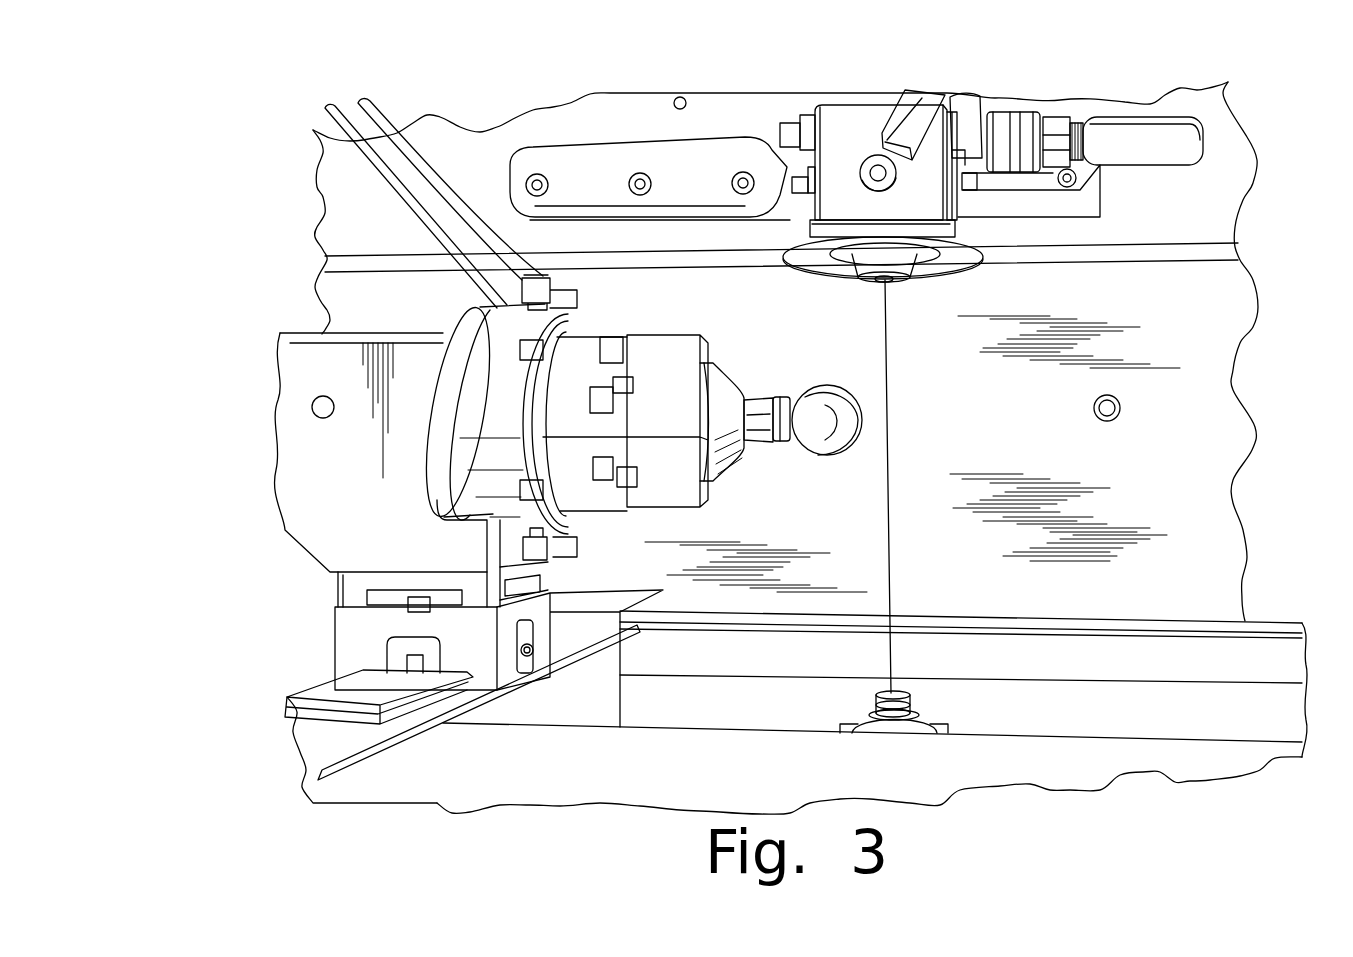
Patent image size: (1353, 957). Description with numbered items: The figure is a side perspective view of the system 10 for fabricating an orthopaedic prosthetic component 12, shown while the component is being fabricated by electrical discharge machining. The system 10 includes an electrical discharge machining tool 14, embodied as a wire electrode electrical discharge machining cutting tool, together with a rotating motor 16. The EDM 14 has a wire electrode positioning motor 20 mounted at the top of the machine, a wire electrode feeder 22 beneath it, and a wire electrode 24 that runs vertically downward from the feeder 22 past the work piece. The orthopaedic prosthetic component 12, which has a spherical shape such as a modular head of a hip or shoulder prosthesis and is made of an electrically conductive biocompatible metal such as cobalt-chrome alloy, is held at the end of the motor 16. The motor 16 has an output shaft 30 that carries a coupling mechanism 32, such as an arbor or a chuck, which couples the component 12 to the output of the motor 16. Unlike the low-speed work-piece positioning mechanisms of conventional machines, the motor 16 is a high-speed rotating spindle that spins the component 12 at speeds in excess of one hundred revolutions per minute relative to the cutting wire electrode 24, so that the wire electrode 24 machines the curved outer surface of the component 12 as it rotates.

The system 10 is at (745, 427).
The orthopaedic prosthetic component 12 is at (825, 398).
The electrical discharge machining tool 14 is at (1043, 92).
The rotating motor 16 is at (653, 352).
The wire electrode positioning motor 20 is at (845, 122).
The wire electrode feeder 22 is at (900, 267).
The wire electrode 24 is at (893, 573).
The output shaft 30 is at (765, 408).
The coupling mechanism 32 is at (790, 395).